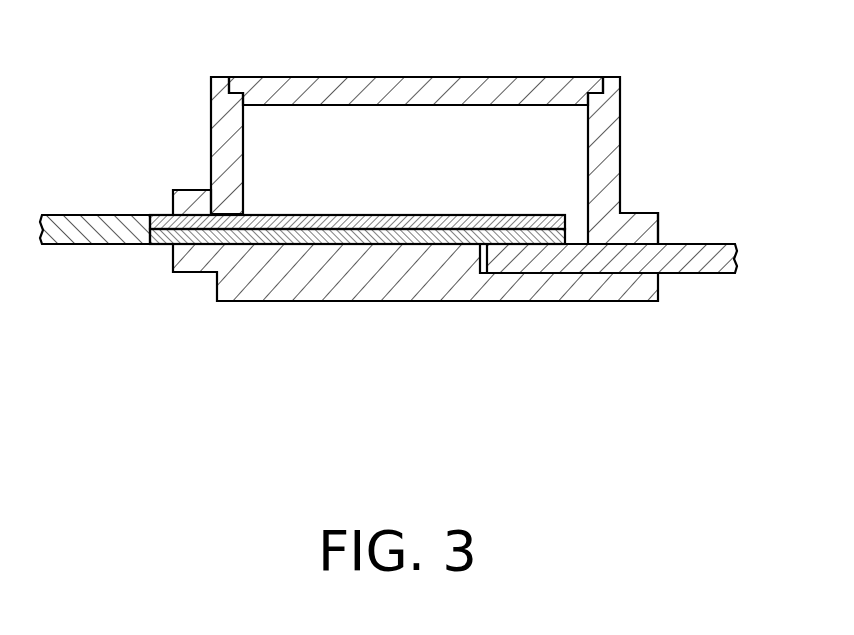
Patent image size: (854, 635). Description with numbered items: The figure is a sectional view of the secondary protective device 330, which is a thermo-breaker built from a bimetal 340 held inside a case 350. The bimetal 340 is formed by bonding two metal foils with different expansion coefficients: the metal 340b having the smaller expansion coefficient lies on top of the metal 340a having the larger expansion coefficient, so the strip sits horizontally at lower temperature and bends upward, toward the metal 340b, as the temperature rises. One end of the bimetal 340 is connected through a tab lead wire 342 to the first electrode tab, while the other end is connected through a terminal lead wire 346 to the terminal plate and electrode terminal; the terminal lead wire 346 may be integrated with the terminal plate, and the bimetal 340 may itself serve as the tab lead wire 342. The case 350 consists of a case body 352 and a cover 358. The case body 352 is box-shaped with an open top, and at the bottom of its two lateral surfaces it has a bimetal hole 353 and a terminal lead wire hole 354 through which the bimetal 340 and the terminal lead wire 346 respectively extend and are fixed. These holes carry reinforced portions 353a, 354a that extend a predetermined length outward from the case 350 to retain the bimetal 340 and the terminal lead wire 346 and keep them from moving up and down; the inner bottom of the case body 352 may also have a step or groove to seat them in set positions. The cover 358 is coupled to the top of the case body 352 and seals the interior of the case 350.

The secondary protective device 330 is at (653, 80).
The bimetal 340 is at (355, 371).
The metal having a larger expansion coefficient 340a is at (350, 266).
The metal having a smaller expansion coefficient 340b is at (260, 227).
The tab lead wire 342 is at (72, 244).
The terminal lead wire 346 is at (685, 278).
The case 350 is at (137, 7).
The case body 352 is at (218, 125).
The bimetal hole 353 is at (180, 203).
The reinforced portion 353a is at (193, 193).
The terminal lead wire hole 354 is at (650, 233).
The reinforced portion 354a is at (643, 217).
The cover 358 is at (255, 82).